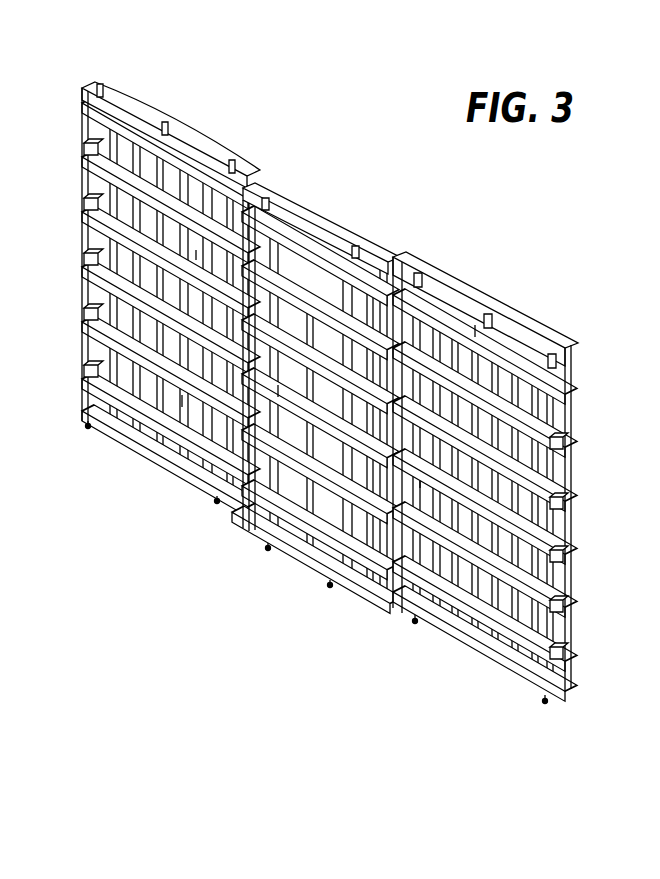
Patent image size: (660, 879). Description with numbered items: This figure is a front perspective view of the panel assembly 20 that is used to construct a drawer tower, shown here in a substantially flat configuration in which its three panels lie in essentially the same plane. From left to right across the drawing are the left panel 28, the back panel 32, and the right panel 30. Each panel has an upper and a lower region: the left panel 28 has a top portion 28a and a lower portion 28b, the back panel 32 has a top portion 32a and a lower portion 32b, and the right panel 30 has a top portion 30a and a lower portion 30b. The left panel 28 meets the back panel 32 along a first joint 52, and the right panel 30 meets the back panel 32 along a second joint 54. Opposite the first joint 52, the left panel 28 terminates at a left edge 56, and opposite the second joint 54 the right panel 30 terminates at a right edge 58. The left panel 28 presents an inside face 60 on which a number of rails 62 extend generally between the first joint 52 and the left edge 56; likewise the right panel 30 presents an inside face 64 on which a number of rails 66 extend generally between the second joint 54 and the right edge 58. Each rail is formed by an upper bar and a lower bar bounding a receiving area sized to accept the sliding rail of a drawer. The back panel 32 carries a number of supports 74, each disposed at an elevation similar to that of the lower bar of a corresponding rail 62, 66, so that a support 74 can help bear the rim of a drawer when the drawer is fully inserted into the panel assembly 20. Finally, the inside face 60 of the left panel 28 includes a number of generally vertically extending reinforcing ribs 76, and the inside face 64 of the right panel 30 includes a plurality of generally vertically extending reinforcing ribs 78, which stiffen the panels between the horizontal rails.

The panel assembly 20 is at (384, 230).
The left panel 28 is at (200, 132).
The top portion 28a is at (158, 94).
The lower portion 28b is at (118, 432).
The right panel 30 is at (498, 304).
The top portion 30a is at (462, 283).
The lower portion 30b is at (492, 657).
The back panel 32 is at (290, 196).
The top portion 32a is at (318, 210).
The lower portion 32b is at (335, 575).
The first joint 52 is at (253, 182).
The second joint 54 is at (398, 262).
The left edge 56 is at (82, 190).
The right edge 58 is at (567, 507).
The inside face 60 is at (173, 406).
The rails 62 is at (198, 258).
The inside face 64 is at (410, 488).
The rails 66 is at (473, 335).
The supports 74 is at (276, 395).
The reinforcing ribs 76 is at (128, 325).
The reinforcing ribs 78 is at (497, 450).